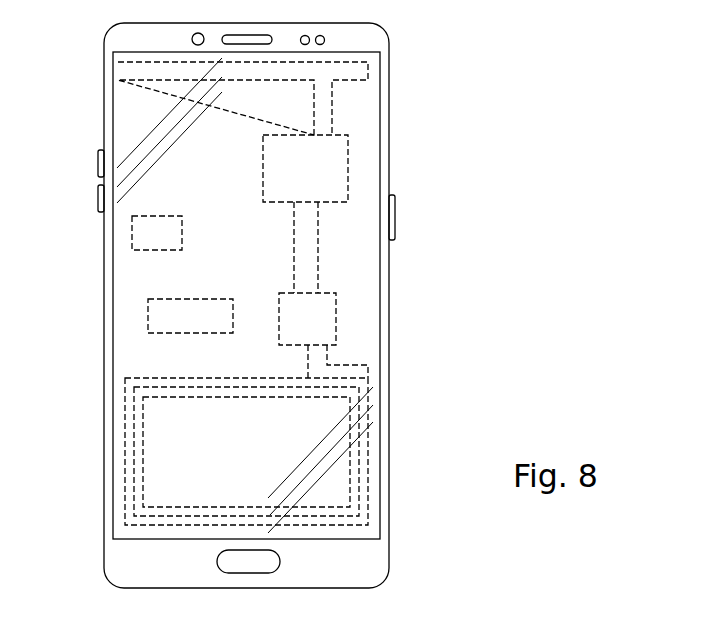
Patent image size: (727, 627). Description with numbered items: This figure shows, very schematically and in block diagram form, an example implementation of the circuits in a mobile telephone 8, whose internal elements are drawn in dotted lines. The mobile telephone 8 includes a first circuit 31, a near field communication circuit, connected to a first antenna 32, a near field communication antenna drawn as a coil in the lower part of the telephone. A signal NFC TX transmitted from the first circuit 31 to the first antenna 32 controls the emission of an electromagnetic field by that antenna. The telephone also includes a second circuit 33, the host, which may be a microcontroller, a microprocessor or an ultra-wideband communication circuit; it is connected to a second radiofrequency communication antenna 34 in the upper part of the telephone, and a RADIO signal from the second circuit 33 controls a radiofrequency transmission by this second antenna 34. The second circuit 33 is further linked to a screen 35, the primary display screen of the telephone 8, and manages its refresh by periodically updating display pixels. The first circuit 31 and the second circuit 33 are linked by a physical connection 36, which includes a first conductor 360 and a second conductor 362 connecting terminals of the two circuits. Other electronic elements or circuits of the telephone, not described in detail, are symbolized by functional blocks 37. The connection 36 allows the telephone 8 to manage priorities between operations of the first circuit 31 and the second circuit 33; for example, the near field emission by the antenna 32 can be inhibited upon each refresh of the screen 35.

The mobile telephone 8 is at (389, 80).
The screen 35 is at (380, 122).
The second radiofrequency communication antenna 34 is at (118, 80).
The second circuit 33 is at (348, 160).
The physical connection 36 is at (284, 247).
The second conductor 362 is at (294, 226).
The first conductor 360 is at (318, 265).
The first circuit 31 is at (336, 317).
The functional blocks 37 is at (132, 233).
The first antenna 32 is at (125, 438).